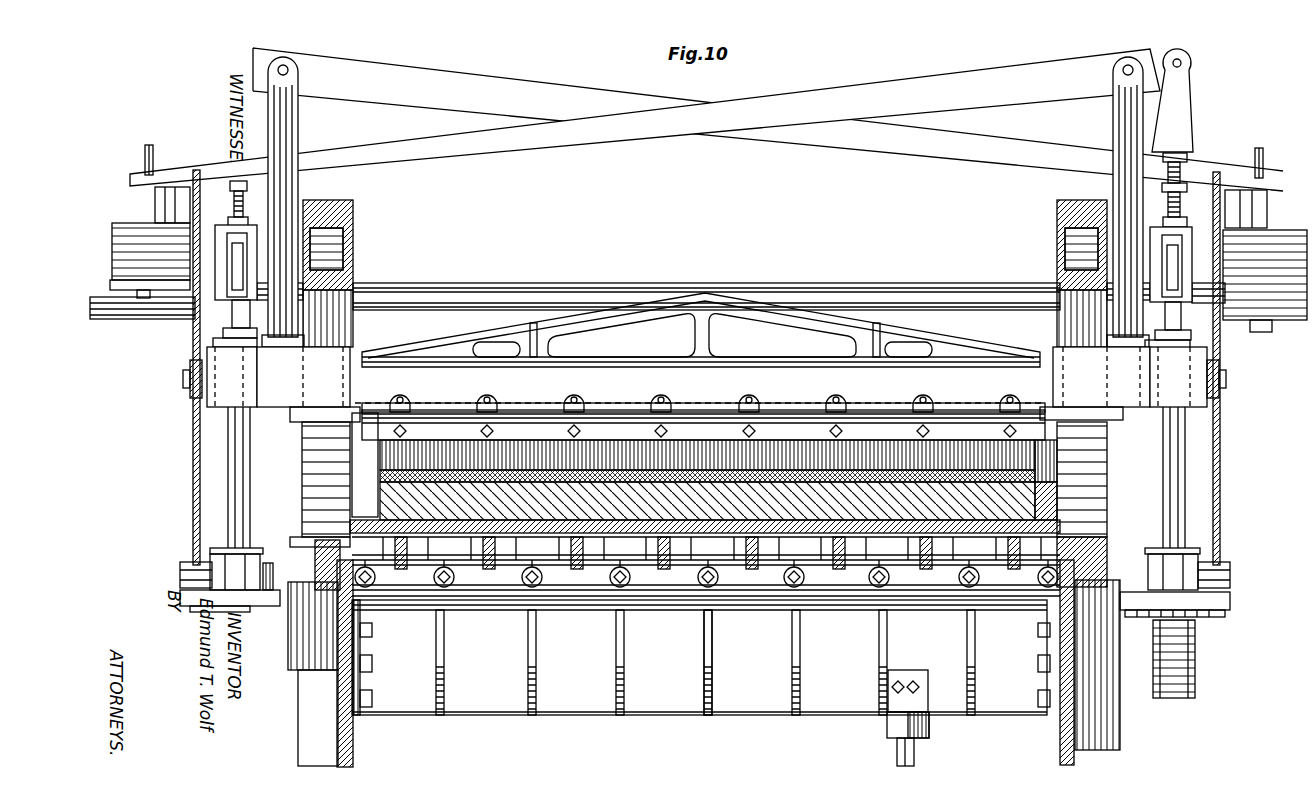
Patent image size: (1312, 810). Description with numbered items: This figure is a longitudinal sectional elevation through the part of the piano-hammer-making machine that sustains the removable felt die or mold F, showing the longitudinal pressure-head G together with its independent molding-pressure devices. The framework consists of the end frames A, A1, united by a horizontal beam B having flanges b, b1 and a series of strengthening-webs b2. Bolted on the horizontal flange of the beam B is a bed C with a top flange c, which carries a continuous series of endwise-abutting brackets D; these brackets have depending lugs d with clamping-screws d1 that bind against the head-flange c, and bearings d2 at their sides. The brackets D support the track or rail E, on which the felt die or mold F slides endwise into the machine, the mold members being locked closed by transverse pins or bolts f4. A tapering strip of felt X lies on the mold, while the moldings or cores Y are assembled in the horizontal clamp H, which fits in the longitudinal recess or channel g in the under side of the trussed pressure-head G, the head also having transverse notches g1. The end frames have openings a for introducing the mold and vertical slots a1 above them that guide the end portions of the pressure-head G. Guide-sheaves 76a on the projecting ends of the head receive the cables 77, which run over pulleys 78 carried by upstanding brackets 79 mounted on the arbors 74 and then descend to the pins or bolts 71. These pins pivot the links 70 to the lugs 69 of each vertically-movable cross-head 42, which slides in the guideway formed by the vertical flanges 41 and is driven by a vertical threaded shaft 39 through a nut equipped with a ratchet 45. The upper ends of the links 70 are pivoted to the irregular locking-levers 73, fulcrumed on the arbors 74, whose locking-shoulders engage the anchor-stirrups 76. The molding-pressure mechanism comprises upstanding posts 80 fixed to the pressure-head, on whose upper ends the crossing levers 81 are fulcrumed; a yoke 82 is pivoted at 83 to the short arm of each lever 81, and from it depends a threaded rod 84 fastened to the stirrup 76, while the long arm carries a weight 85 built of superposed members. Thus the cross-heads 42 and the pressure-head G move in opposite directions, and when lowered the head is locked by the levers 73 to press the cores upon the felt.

The levers 81 is at (838, 93).
The upstanding posts 80 is at (299, 188).
The yoke 82 is at (1185, 120).
The pivot 83 is at (1183, 62).
The threaded rod 84 is at (247, 197).
The pulleys 78 is at (224, 180).
The upstanding brackets 79 is at (160, 210).
The weight 85 is at (114, 228).
The cables 77 is at (192, 450).
The anchor-stirrup 76 is at (250, 230).
The locking-levers 73 is at (237, 262).
The vertical slots a1 is at (353, 325).
The arbors 74 is at (566, 293).
The pressure-head G is at (701, 348).
The pins or bolts f4 is at (408, 396).
The longitudinal recess or channel g is at (440, 398).
The transverse notches g1 is at (284, 404).
The guide-sheaves 76a is at (192, 388).
The clamp H is at (703, 426).
The moldings or cores Y is at (397, 455).
The strip of felt X is at (378, 488).
The felt die or mold F is at (1027, 490).
The track or rail E is at (1027, 517).
The brackets D is at (940, 555).
The bearings d2 is at (962, 550).
The clamping-screws d1 is at (884, 566).
The depending lugs d is at (453, 576).
The top flange c is at (743, 570).
The openings a is at (797, 581).
The bed C is at (637, 598).
The horizontal beam B is at (701, 657).
The flange b1 is at (562, 614).
The strengthening-webs b2 is at (798, 670).
The flange b is at (758, 713).
The end frame A is at (310, 484).
The end frame A1 is at (1097, 486).
The links 70 is at (237, 445).
The lugs 69 is at (258, 548).
The transverse pins or bolts 71 is at (193, 568).
The cross-head 42 is at (272, 607).
The ratchet 45 is at (1207, 625).
The vertical threaded shafts 39 is at (1195, 668).
The vertical flanges 41 is at (303, 655).